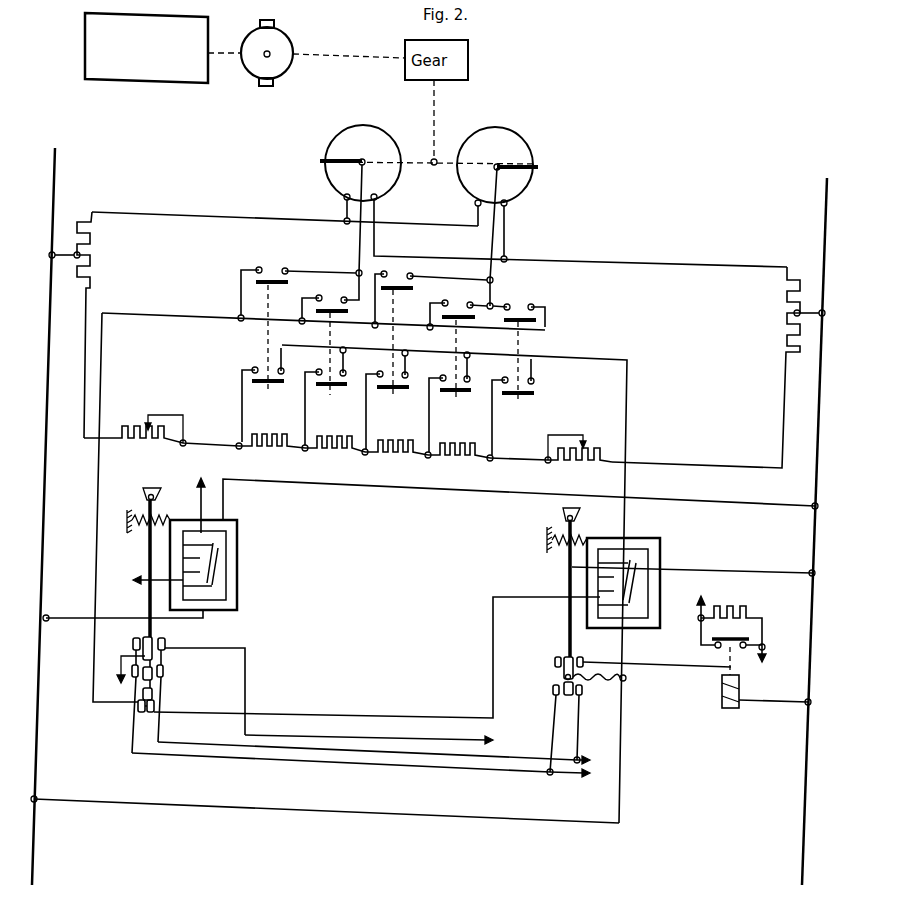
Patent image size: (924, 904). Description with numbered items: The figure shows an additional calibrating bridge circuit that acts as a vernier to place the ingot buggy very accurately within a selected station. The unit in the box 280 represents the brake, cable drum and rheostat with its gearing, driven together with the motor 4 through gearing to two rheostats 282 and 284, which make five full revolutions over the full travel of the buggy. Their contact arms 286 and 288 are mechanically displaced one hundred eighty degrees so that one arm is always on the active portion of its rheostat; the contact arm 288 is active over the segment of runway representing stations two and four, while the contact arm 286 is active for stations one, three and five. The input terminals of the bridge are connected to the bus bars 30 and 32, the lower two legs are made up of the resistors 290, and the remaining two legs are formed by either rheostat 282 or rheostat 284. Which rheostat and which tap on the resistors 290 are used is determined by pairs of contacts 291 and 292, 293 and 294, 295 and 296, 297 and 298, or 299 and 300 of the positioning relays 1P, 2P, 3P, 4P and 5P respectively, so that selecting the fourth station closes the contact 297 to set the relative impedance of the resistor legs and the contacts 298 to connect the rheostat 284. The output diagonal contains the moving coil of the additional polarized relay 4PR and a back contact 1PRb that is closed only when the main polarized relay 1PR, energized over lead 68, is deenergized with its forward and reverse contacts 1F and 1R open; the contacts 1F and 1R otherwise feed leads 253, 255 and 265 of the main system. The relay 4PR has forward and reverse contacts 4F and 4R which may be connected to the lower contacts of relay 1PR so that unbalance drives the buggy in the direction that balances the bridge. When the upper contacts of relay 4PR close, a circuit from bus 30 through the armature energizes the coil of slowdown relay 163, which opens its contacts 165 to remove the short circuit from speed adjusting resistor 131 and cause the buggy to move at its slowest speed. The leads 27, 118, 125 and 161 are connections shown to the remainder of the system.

The box 280 is at (170, 81).
The motor 4 is at (307, 81).
The contact arm 288 is at (350, 158).
The contact arm 286 is at (505, 158).
The rheostat 284 is at (437, 197).
The rheostat 282 is at (568, 204).
The bus bar 30 is at (58, 164).
The bus bar 32 is at (824, 198).
The contact 298 is at (270, 265).
The contact 294 is at (346, 298).
The contact 296 is at (387, 278).
The contact 292 is at (468, 302).
The contact 300 is at (510, 306).
The positioning relay 4P is at (280, 338).
The positioning relay 2P is at (342, 354).
The positioning relay 3P is at (403, 343).
The positioning relay 1P is at (467, 360).
The positioning relay 5P is at (528, 362).
The contact 297 is at (269, 395).
The contact 293 is at (333, 399).
The contact 295 is at (396, 402).
The contact 291 is at (457, 405).
The contact 299 is at (524, 407).
The resistors 290 is at (404, 478).
The control output lead 27 is at (201, 493).
The polarized relay 1PR is at (233, 562).
The lead 68 is at (145, 581).
The forward contacts 1F is at (133, 645).
The reverse contacts 1R is at (165, 650).
The lamp lead 118 is at (131, 684).
The back contact 1PRb is at (152, 694).
The polarized relay 4PR is at (646, 548).
The forward contact 4F is at (553, 690).
The reverse contact 4R is at (582, 690).
The lead 125 is at (707, 597).
The speed adjusting resistor 131 is at (739, 608).
The contacts 165 is at (745, 633).
The lead 161 is at (764, 666).
The slowdown relay 163 is at (728, 710).
The lead 253 is at (385, 744).
The lead 265 is at (385, 752).
The lead 255 is at (369, 777).